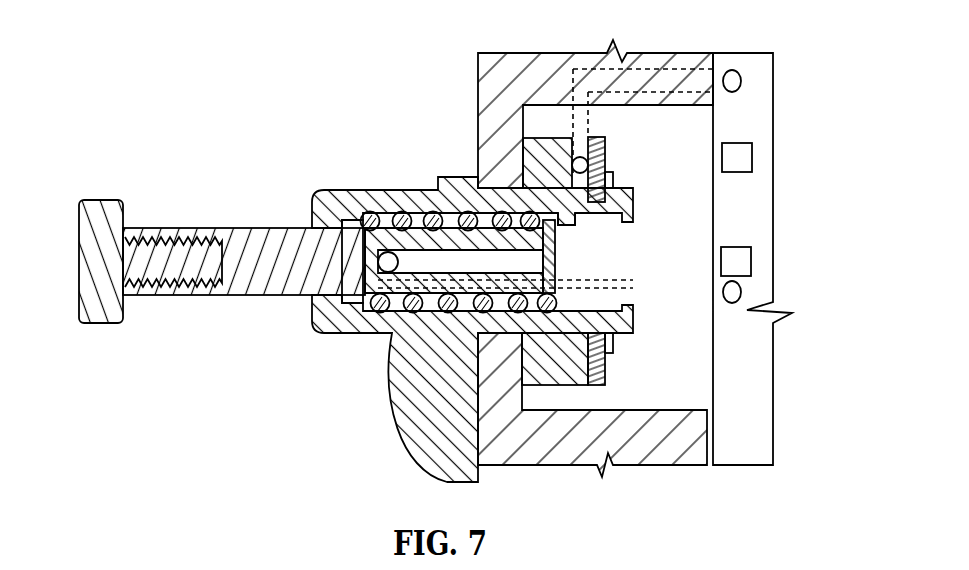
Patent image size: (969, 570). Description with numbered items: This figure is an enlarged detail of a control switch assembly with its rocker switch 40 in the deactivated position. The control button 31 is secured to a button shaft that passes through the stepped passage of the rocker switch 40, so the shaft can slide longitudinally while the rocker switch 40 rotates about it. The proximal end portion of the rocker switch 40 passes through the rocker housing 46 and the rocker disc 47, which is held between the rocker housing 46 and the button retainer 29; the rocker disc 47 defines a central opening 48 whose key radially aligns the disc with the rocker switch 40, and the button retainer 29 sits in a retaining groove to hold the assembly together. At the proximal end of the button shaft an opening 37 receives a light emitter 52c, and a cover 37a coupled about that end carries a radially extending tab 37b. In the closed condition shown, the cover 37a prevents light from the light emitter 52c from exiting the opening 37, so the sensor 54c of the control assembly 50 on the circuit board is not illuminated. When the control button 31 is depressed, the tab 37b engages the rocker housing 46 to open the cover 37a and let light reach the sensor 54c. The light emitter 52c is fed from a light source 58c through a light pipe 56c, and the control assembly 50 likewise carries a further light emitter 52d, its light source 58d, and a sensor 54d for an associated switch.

The control button 31 is at (93, 252).
The rocker switch 40 is at (314, 215).
The opening 37 is at (533, 262).
The cover 37a is at (550, 263).
The tab 37b is at (557, 224).
The light emitter 52c is at (384, 254).
The light pipe 56c is at (447, 312).
The rocker housing 46 is at (570, 186).
The central opening 48 is at (541, 150).
The button retainer 29 is at (610, 168).
The light emitter 52d is at (582, 157).
The rocker disc 47 is at (597, 386).
The control assembly 50 is at (759, 133).
The light source 58d is at (741, 80).
The sensor 54d is at (752, 155).
The sensor 54c is at (751, 262).
The light source 58c is at (741, 291).